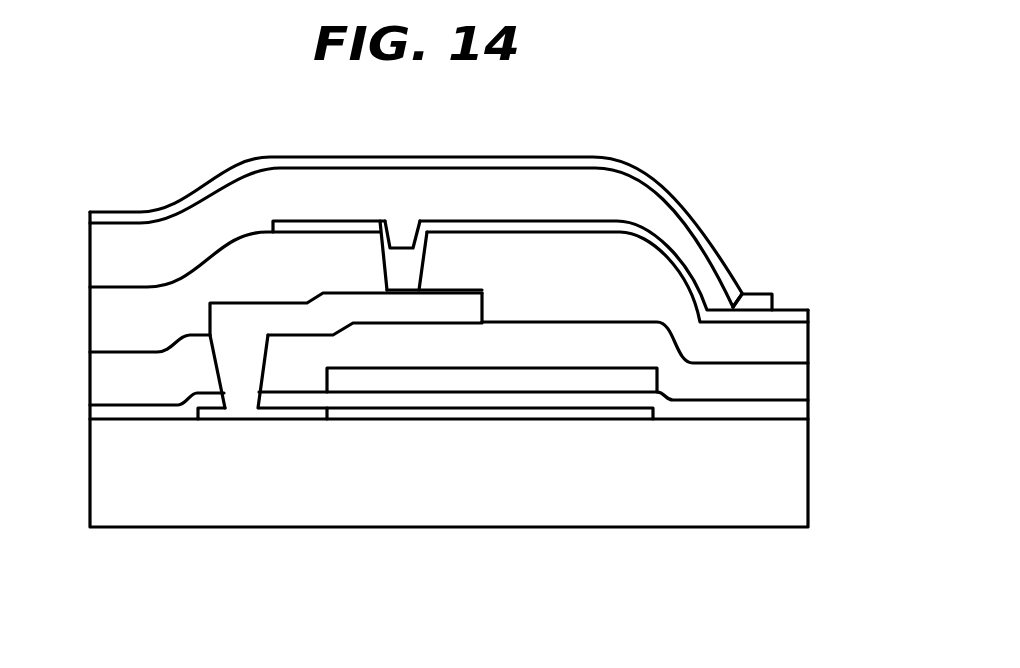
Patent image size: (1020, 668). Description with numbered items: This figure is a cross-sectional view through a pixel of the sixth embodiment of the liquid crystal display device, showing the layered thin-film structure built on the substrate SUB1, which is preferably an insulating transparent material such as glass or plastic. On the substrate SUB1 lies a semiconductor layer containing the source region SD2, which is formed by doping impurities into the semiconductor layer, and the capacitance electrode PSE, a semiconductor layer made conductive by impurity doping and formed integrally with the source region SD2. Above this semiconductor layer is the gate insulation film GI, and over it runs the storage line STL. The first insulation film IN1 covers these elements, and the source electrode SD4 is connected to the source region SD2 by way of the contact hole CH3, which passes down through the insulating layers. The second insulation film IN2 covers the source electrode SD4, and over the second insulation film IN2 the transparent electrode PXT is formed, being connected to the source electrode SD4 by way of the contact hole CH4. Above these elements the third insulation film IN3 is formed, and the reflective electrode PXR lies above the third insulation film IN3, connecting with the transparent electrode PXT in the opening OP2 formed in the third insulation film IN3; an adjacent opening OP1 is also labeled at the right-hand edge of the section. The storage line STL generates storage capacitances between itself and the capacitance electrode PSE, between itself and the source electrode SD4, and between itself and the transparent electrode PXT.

The substrate SUB1 is at (193, 498).
The capacitance electrode PSE is at (430, 412).
The gate insulation film GI is at (500, 403).
The storage line STL is at (594, 385).
The first insulation film IN1 is at (693, 388).
The contact hole CH3 is at (258, 368).
The source region SD2 is at (280, 422).
The source electrode SD4 is at (452, 297).
The second insulation film IN2 is at (211, 278).
The contact hole CH4 is at (403, 263).
The transparent electrode PXT is at (625, 220).
The third insulation film IN3 is at (373, 183).
The reflective electrode PXR is at (637, 162).
The first opening OP1 is at (770, 294).
The opening OP2 is at (740, 293).